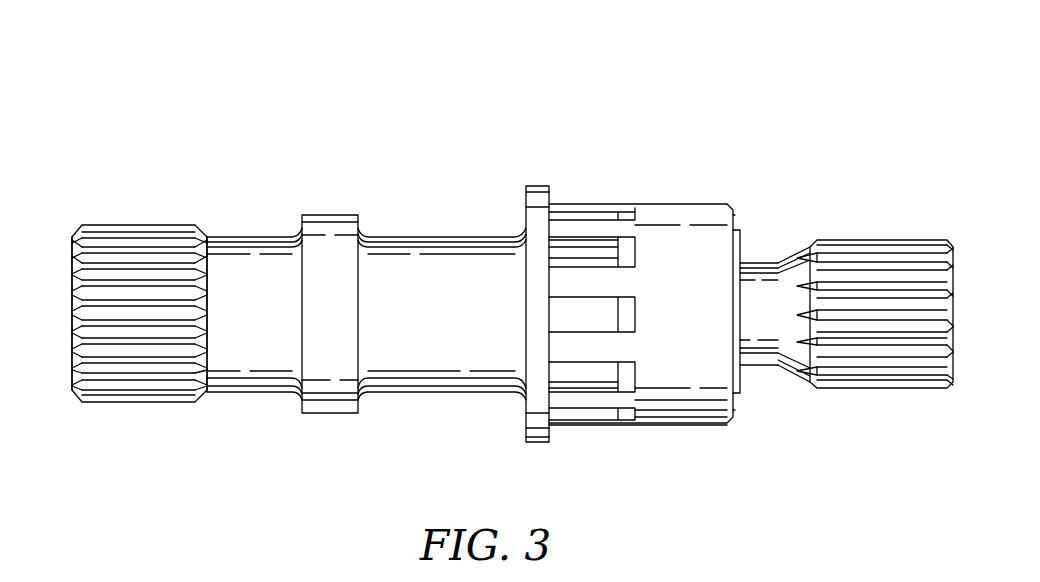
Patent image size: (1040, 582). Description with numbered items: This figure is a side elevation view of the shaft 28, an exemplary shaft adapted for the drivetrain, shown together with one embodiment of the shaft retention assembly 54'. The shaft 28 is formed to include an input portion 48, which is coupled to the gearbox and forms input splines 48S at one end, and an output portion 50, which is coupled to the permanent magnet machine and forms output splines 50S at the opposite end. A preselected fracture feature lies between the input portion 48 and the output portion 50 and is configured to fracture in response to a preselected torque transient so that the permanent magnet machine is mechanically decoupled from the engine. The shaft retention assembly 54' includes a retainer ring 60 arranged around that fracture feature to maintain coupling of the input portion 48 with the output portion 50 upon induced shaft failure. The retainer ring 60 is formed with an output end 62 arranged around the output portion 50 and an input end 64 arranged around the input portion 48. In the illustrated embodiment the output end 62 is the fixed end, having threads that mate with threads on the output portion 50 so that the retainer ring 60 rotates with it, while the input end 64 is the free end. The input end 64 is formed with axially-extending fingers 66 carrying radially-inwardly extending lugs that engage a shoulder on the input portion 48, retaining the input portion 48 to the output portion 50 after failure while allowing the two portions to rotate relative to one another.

The shaft 28 is at (128, 122).
The input portion 48 is at (125, 212).
The input splines 48S is at (147, 226).
The output portion 50 is at (890, 234).
The output splines 50S is at (873, 240).
The shaft retention assembly 54' is at (669, 234).
The retainer ring 60 is at (700, 177).
The output end 62 is at (752, 216).
The input end 64 is at (575, 193).
The axially-extending fingers 66 is at (624, 328).